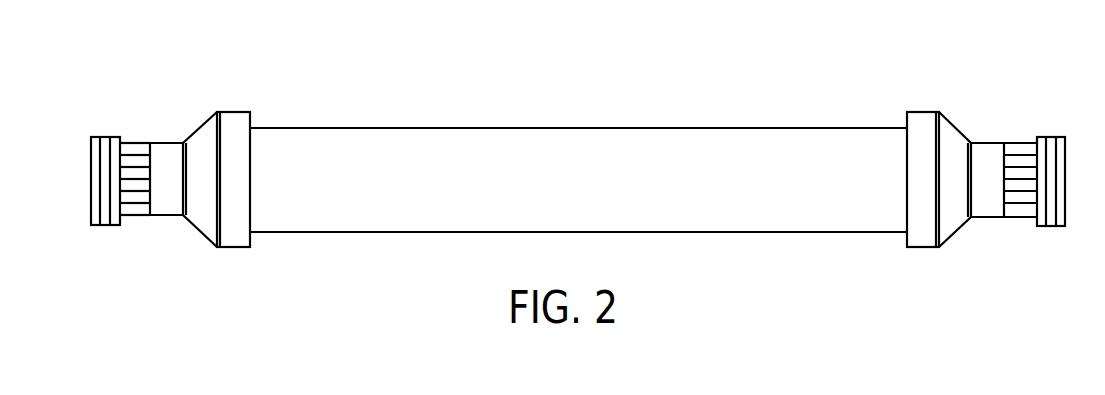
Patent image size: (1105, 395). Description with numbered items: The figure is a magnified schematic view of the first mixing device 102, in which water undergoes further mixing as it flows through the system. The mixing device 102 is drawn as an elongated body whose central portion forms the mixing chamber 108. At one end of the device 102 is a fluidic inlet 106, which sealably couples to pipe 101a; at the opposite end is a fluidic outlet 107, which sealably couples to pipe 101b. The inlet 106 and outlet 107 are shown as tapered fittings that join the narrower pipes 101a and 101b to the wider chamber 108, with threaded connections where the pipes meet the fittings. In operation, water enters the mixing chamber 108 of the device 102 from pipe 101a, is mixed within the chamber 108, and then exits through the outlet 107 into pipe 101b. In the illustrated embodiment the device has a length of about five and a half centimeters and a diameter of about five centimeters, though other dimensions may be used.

The mixing device 102 is at (60, 104).
The pipe 101a is at (106, 225).
The pipe 101b is at (1050, 226).
The fluidic inlet 106 is at (203, 213).
The fluidic outlet 107 is at (952, 224).
The mixing chamber 108 is at (577, 128).